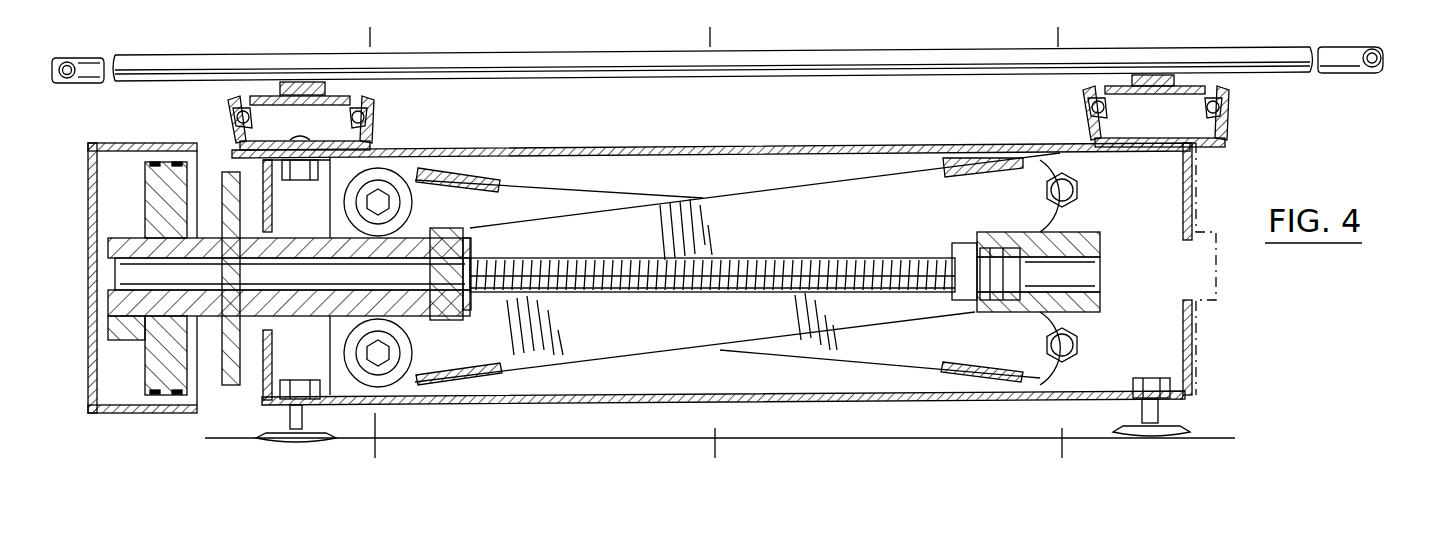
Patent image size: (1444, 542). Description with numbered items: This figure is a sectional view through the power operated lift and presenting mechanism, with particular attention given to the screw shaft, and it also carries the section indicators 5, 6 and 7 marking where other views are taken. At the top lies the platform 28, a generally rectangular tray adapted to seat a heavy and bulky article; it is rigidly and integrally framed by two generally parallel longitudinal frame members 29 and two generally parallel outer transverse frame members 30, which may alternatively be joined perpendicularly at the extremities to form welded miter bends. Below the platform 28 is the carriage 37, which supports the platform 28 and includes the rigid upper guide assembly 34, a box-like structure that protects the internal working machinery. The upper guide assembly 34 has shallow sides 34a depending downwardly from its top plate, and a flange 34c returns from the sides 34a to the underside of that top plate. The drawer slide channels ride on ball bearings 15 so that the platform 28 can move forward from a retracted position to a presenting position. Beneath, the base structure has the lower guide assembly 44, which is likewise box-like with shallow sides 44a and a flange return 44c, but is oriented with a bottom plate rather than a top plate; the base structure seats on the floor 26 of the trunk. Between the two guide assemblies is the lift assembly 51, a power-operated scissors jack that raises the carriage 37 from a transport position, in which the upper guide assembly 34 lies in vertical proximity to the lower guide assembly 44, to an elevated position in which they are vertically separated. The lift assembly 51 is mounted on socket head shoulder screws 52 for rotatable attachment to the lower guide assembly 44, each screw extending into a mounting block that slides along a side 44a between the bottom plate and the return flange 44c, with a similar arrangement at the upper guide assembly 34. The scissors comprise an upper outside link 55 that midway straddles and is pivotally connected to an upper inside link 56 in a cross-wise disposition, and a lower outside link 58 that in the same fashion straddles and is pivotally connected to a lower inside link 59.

The section line 5- 5 is at (368, 37).
The section line 6- 6 is at (708, 37).
The section line 7- 7 is at (1056, 37).
The ball bearings 15 is at (1230, 102).
The floor 26 is at (530, 430).
The platform 28 is at (796, 50).
The longitudinal frame members 29 is at (515, 68).
The outer transverse frame members 30 is at (1383, 48).
The upper guide assembly 34 is at (1195, 214).
The shallow sides 34a is at (1196, 218).
The flange 34c is at (873, 145).
The carriage 37 is at (1243, 151).
The lower guide assembly 44 is at (1198, 345).
The shallow sides 44a is at (1195, 378).
The flange return 44c is at (852, 400).
The lift assembly 51 is at (701, 198).
The socket head shoulder screws 52 is at (385, 204).
The upper outside link 55 is at (818, 200).
The upper inside link 56 is at (567, 196).
The lower outside link 58 is at (615, 350).
The lower inside link 59 is at (836, 352).